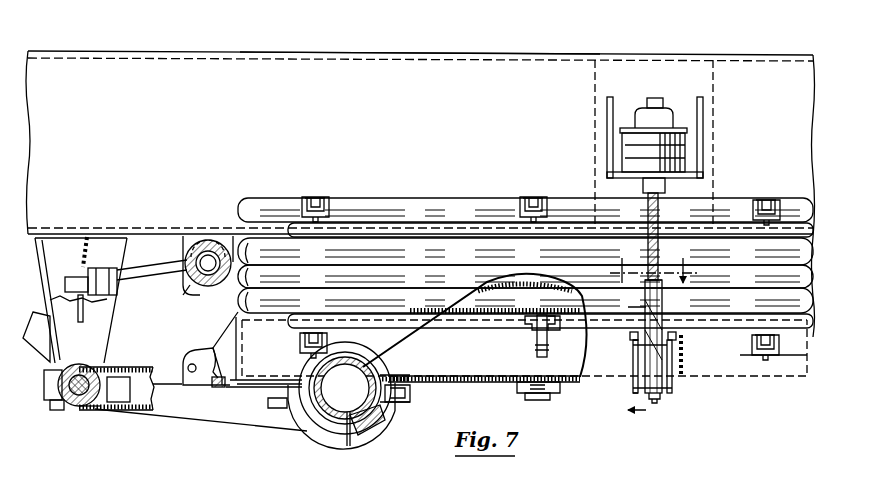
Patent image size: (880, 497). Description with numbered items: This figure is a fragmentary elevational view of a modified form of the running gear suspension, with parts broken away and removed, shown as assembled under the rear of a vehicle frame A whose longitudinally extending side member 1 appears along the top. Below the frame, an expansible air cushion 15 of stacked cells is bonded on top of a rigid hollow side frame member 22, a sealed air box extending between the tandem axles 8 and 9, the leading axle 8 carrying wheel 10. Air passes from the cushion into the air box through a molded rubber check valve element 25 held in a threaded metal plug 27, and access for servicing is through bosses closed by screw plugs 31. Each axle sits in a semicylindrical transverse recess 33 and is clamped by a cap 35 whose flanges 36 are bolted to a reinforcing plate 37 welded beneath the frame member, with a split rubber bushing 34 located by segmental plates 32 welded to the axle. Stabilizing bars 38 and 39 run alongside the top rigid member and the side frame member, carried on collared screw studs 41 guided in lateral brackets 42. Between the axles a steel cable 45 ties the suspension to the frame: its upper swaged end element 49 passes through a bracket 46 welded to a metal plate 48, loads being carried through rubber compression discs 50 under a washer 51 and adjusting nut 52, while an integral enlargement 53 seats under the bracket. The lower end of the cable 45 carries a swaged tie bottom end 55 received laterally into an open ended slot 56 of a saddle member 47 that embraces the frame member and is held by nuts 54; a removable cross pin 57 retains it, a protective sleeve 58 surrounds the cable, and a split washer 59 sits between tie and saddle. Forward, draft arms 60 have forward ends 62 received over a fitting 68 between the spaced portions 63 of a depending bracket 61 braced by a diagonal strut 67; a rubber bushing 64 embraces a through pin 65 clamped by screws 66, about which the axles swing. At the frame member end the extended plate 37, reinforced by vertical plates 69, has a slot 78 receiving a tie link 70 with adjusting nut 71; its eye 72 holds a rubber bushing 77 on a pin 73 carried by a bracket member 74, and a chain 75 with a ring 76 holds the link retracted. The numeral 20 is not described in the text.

The frame A is at (290, 50).
The side member 1 is at (448, 129).
The axle 8 is at (377, 407).
The axle 9 is at (651, 272).
The wheel 10 is at (668, 364).
The air cushion 15 is at (373, 258).
The mounting bracket 20 is at (560, 322).
The side frame member 22 is at (737, 360).
The molded rubber element 25 is at (537, 342).
The metal plug 27 is at (527, 325).
The metal screw plug 31 is at (527, 398).
The segmental plate 32 is at (362, 362).
The transverse recess 33 is at (387, 368).
The rubber bushing 34 is at (305, 368).
The cap 35 is at (373, 433).
The flange 36 is at (272, 402).
The reinforcing plate 37 is at (438, 375).
The stabilizing bar 38 is at (412, 223).
The stabilizing bar 39 is at (802, 322).
The collared screw stud 41 is at (318, 197).
The lateral bracket 42 is at (305, 198).
The flexible inextensible element 45 is at (659, 210).
The lateral bracket 46 is at (700, 140).
The saddle member 47 is at (632, 398).
The metal plate 48 is at (594, 125).
The solid metal element 49 is at (660, 100).
The rubber compression disc 50 is at (630, 150).
The pressure plate 51 is at (678, 122).
The adjusting nut 52 is at (640, 112).
The integral enlargement 53 is at (667, 184).
The nut 54 is at (662, 395).
The tie bottom end 55 is at (672, 385).
The open ended slot 56 is at (645, 353).
The cross pin 57 is at (628, 334).
The protective sleeve 58 is at (640, 307).
The split metal washer 59 is at (635, 375).
The draft arm 60 is at (212, 416).
The bracket 61 is at (118, 246).
The forward end 62 is at (118, 368).
The spaced portion 63 is at (45, 378).
The rubber bushing 64 is at (75, 375).
The through pin 65 is at (80, 397).
The screw 66 is at (50, 407).
The diagonal strut 67 is at (42, 325).
The fitting 68 is at (92, 412).
The vertical plate 69 is at (230, 333).
The tie link 70 is at (140, 268).
The adjusting nut 71 is at (112, 290).
The eye 72 is at (196, 285).
The pin 73 is at (207, 235).
The bracket member 74 is at (212, 243).
The chain 75 is at (92, 238).
The ring 76 is at (78, 282).
The rubber bushing 77 is at (203, 287).
The slot 78 is at (182, 388).